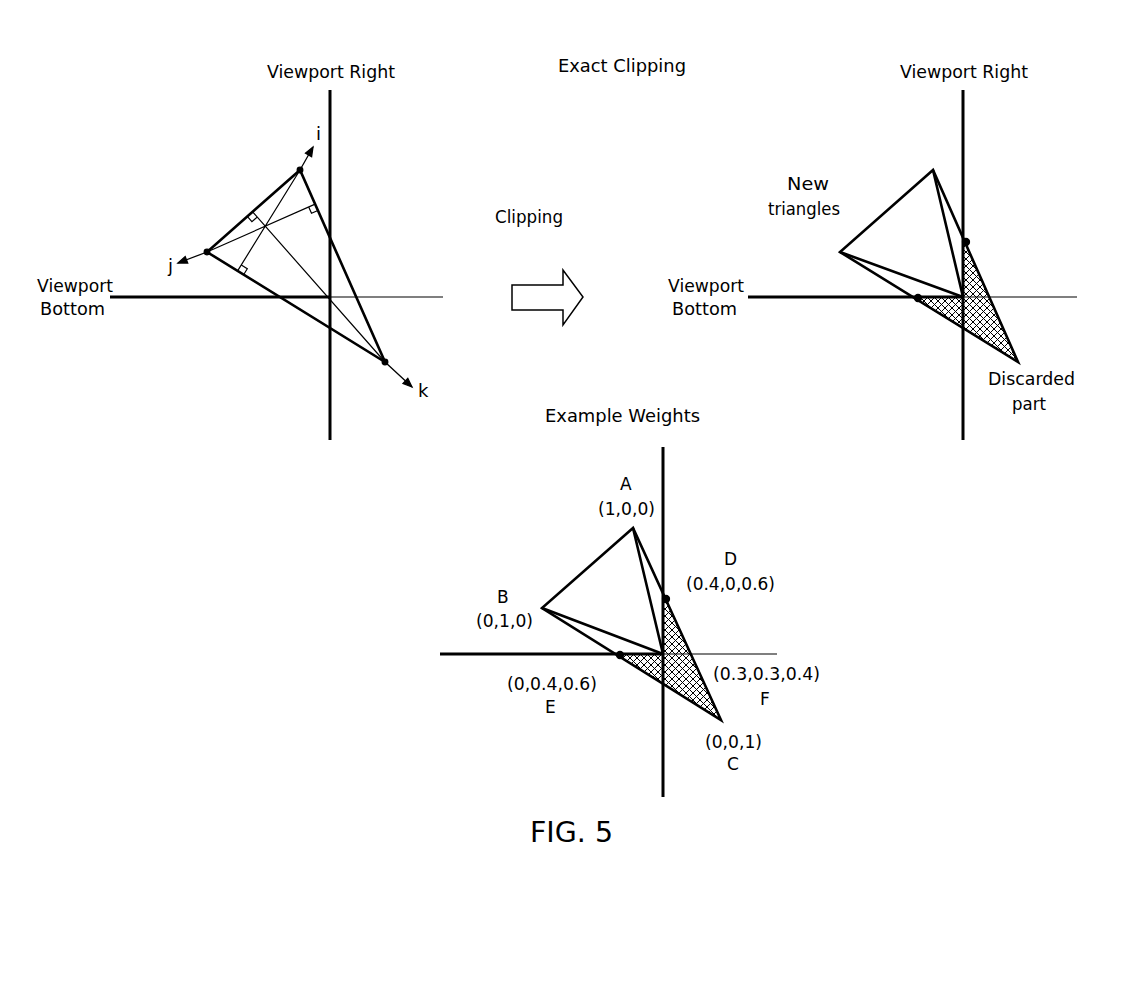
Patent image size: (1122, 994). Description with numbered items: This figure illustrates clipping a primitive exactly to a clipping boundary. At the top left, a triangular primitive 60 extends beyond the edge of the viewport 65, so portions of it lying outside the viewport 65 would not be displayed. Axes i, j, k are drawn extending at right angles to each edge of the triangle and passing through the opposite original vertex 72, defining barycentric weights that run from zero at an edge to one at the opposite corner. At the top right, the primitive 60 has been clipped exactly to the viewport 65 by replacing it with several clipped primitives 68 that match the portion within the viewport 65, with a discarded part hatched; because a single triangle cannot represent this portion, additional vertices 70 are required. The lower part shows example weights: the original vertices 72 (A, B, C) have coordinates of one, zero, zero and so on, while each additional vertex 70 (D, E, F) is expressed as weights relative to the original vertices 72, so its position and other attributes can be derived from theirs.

The primitive 60 is at (348, 272).
The viewport 65 is at (332, 130).
The clipped primitives 68 is at (890, 228).
The additional vertices 70 is at (968, 243).
The original vertices 72 is at (299, 170).